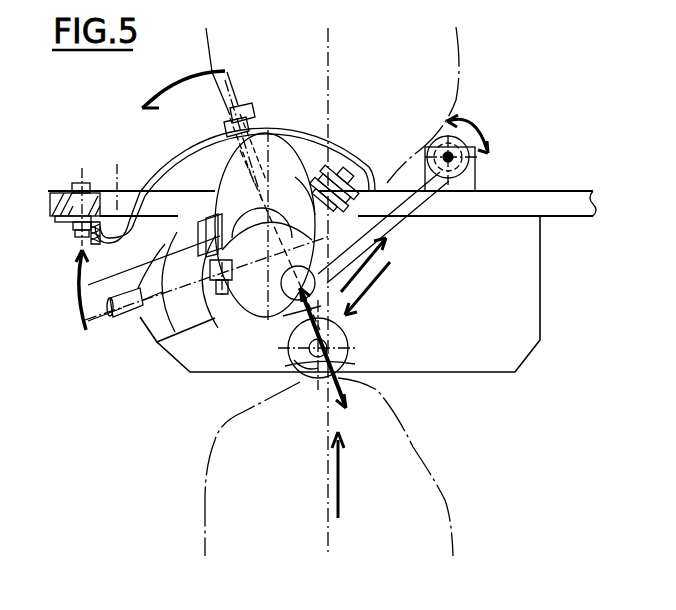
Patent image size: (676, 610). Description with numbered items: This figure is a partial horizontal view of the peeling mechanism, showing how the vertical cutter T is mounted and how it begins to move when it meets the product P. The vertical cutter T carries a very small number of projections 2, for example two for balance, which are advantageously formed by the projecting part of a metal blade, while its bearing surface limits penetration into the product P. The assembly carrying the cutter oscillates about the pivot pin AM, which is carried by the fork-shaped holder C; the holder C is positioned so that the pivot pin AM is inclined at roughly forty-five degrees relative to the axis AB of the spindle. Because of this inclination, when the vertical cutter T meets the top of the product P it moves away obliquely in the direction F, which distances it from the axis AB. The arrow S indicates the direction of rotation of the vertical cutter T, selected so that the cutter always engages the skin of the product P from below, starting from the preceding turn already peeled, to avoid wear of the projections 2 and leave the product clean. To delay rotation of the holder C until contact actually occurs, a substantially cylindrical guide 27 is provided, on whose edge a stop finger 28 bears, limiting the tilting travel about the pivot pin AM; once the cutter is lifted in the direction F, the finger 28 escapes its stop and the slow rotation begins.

The stop finger 28 is at (249, 112).
The cylindrical guide 27 is at (300, 128).
The fork-shaped holder C is at (328, 172).
The pivot pin AM is at (118, 197).
The projections 2 is at (340, 332).
The direction F is at (292, 340).
The vertical cutter T is at (345, 350).
The arrow S is at (320, 389).
The axis AB is at (326, 495).
The product P is at (437, 474).